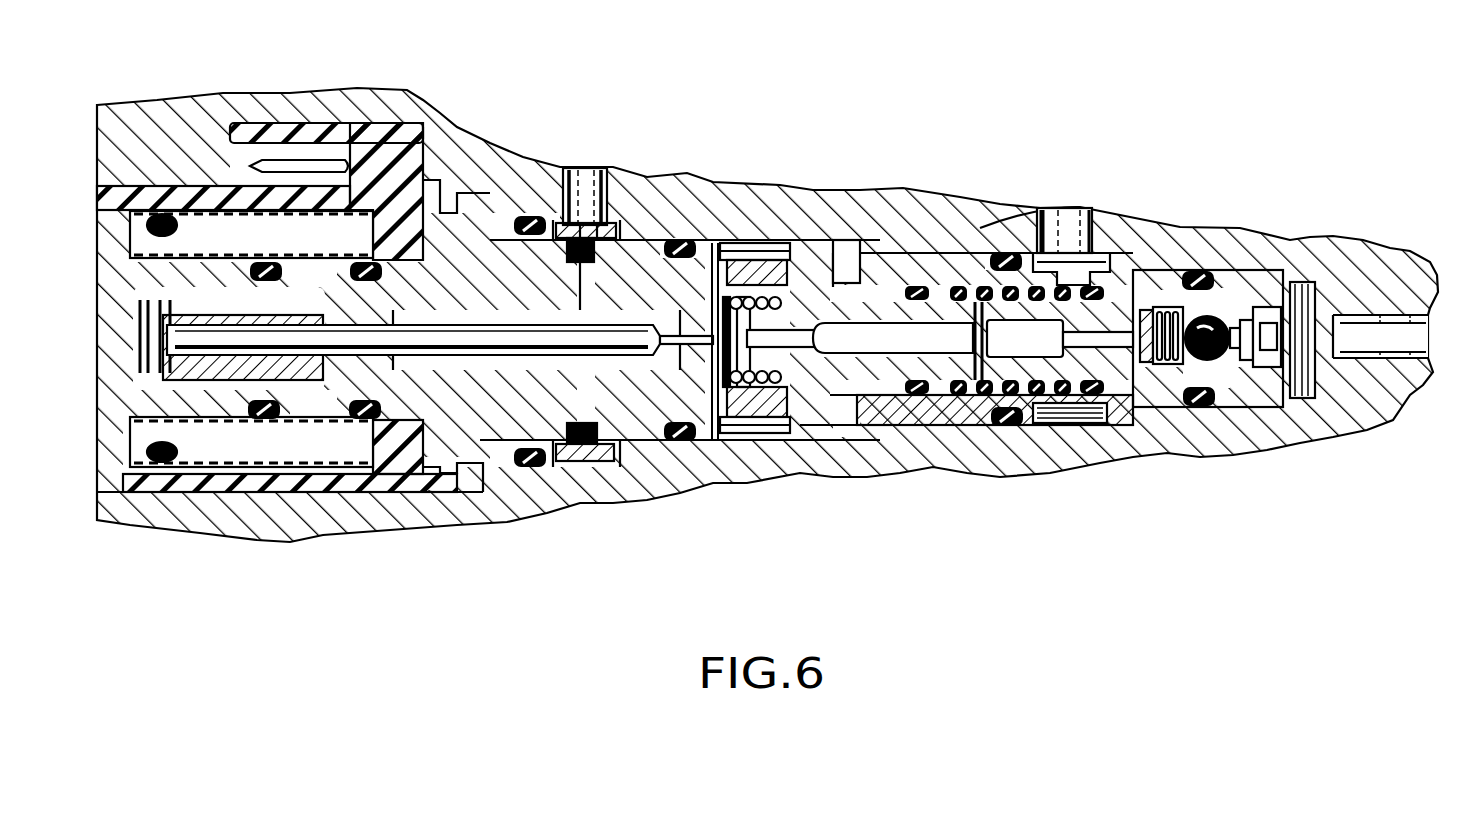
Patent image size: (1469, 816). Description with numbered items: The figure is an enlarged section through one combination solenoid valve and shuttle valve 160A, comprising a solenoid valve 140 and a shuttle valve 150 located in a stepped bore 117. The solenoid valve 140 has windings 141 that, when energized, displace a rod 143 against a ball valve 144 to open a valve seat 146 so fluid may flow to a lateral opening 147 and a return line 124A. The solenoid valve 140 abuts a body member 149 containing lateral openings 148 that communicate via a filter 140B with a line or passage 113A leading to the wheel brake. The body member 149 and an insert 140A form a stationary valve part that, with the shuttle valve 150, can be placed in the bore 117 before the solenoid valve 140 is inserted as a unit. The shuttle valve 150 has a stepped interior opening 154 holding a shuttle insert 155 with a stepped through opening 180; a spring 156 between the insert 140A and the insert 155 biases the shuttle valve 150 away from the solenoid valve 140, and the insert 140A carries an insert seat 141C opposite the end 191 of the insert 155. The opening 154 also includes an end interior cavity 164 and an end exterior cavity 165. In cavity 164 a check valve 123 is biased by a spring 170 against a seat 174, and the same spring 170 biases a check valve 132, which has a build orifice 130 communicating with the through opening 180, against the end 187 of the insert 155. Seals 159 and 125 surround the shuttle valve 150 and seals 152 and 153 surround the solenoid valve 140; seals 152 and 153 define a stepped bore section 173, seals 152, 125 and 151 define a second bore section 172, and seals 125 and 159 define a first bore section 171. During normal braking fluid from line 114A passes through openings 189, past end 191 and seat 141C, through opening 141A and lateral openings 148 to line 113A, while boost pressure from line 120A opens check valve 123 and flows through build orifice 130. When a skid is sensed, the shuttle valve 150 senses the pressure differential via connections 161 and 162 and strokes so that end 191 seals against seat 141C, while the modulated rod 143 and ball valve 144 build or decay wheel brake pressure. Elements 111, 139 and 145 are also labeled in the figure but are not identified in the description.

The solenoid valve 140 is at (400, 140).
The combination solenoid valve and shuttle valve 160A is at (769, 96).
The rod 143 is at (470, 332).
The return line 124A is at (580, 167).
The lateral opening 147 is at (597, 238).
The O-ring seal 111 is at (657, 184).
The valve seat 146 is at (716, 300).
The lateral openings 148 is at (740, 257).
The line or passage 113A is at (786, 215).
The filter 140B is at (856, 250).
The insert 140A is at (900, 262).
The insert seat 141C is at (995, 288).
The line 114A is at (1083, 235).
The connection 162 is at (870, 255).
The shuttle valve 150 is at (923, 290).
The spring 156 is at (1022, 262).
The openings 189 is at (1100, 290).
The check valve 132 is at (1190, 272).
The first bore section 171 is at (1157, 310).
The end interior cavity 164 is at (1195, 318).
The check valve 123 is at (1230, 297).
The end exterior cavity 165 is at (1300, 283).
The connection 161 is at (1322, 308).
The windings 141 is at (270, 245).
The through opening 180 is at (1045, 349).
The line 120A is at (1390, 348).
The seal 153 is at (525, 467).
The stepped bore section 173 is at (640, 445).
The seal 152 is at (668, 442).
The ball valve 144 is at (735, 390).
The body member 149 is at (760, 420).
The plate 145 is at (752, 392).
The connecting rod 139 is at (827, 423).
The second bore section 172 is at (850, 425).
The stepped bore 117 is at (900, 425).
The interior through opening 141A is at (935, 425).
The seal 151 is at (968, 395).
The end 191 is at (1010, 423).
The seal 125 is at (1045, 423).
The shuttle insert 155 is at (1105, 395).
The stepped interior opening 154 is at (1090, 425).
The end 187 is at (1140, 395).
The build orifice 130 is at (1162, 383).
The spring 170 is at (1175, 388).
The seal 159 is at (1217, 406).
The seat 174 is at (1243, 383).